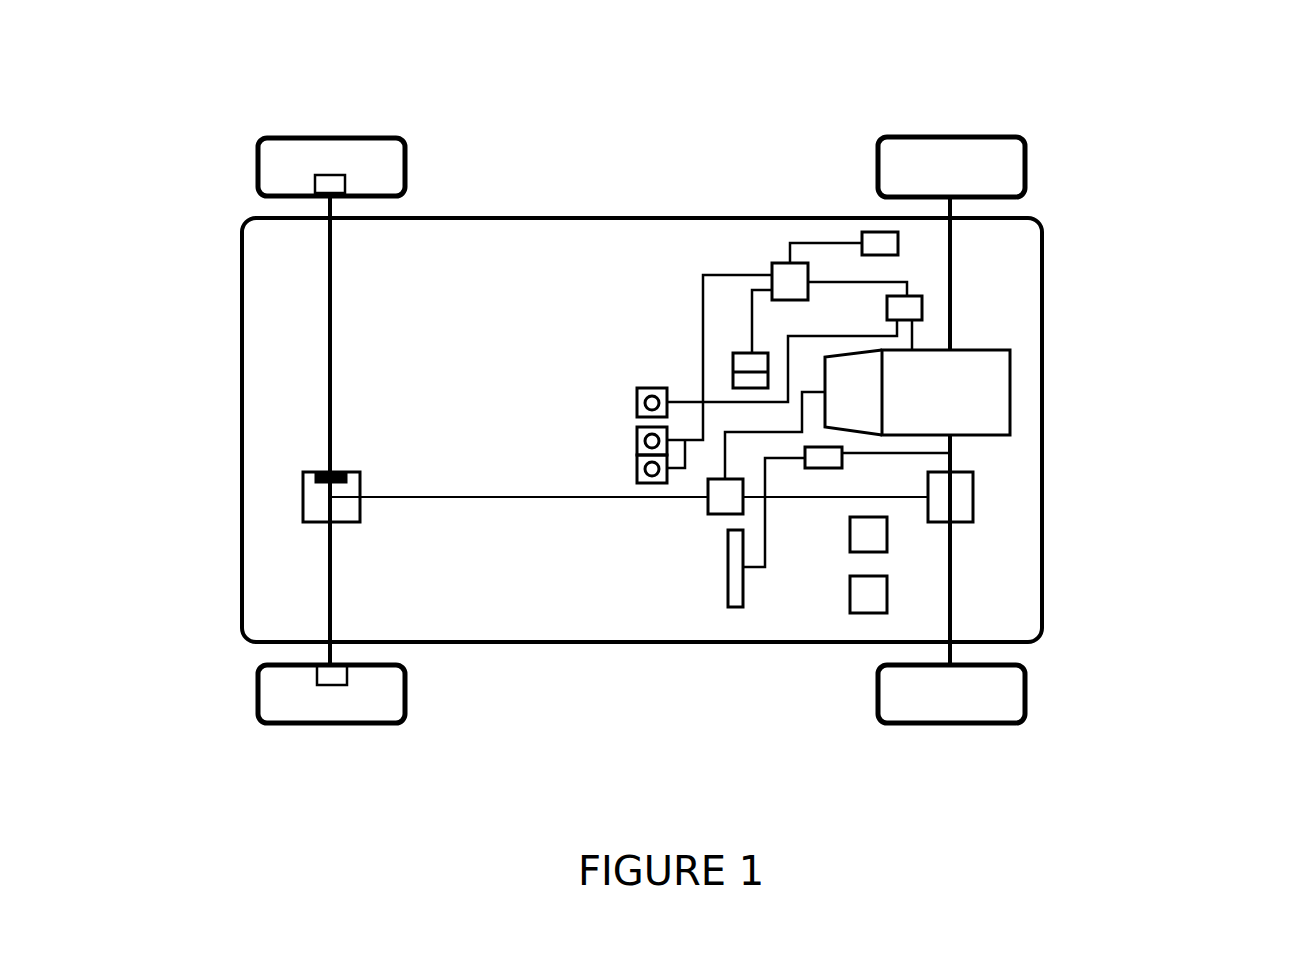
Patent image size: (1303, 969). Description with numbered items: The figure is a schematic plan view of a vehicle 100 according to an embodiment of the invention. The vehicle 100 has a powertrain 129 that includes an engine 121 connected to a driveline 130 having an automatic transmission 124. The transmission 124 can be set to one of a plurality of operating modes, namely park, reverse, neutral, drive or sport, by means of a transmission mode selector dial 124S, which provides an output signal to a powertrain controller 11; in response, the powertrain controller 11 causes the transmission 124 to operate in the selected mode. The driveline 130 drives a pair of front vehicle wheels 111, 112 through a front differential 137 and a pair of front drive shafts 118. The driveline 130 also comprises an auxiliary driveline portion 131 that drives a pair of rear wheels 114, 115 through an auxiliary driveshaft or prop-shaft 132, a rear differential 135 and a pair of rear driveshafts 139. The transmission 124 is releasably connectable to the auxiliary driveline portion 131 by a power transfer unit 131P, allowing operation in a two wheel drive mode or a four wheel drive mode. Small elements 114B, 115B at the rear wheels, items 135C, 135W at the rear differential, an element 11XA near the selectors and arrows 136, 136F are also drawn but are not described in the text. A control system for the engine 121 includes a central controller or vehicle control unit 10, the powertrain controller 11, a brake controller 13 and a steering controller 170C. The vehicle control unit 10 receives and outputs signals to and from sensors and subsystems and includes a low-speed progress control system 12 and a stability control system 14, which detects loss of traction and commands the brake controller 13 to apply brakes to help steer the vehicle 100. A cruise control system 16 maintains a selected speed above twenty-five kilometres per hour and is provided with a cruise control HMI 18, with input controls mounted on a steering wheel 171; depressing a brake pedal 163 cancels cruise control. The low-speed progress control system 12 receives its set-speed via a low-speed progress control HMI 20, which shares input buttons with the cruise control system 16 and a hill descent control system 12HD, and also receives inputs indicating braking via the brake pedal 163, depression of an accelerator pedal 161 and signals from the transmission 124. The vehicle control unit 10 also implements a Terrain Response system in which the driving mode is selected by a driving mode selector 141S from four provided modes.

The vehicle 100 is at (1192, 154).
The powertrain 129 is at (1187, 392).
The driveline 130 is at (1152, 621).
The front vehicle wheel 111 is at (1002, 160).
The front vehicle wheel 112 is at (1003, 710).
The rear wheel 114 is at (303, 160).
The rear wheel 115 is at (288, 698).
The brake 114B is at (315, 183).
The brake 115B is at (318, 672).
The front drive shafts 118 is at (950, 263).
The rear driveshafts 139 is at (330, 292).
The steering system 136 is at (307, 338).
The rear differential 135 is at (313, 522).
The clutch 135C is at (325, 476).
The worm gear 135W is at (330, 497).
The auxiliary driveshaft or prop-shaft 132 is at (492, 497).
The auxiliary driveline portion 131 is at (530, 693).
The power transfer unit 131P is at (718, 507).
The front differential 137 is at (967, 496).
The steering force 136F is at (967, 452).
The engine 121 is at (978, 378).
The automatic transmission 124 is at (852, 372).
The transmission mode selector dial 124S is at (637, 468).
The acceleration sensor 11XA is at (637, 440).
The driving mode selector 141S is at (637, 402).
The vehicle control unit 10 is at (761, 198).
The low-speed progress control system 12 is at (829, 298).
The stability control system 14 is at (829, 298).
The cruise control system 16 is at (829, 298).
The hill descent control system 12HD is at (782, 273).
The brake controller 13 is at (872, 243).
The powertrain controller 11 is at (913, 310).
The cruise control HMI 18 is at (698, 262).
The low-speed progress control HMI 20 is at (733, 355).
The steering controller 170C is at (823, 463).
The steering wheel 171 is at (735, 603).
The brake pedal 163 is at (863, 537).
The accelerator pedal 161 is at (867, 602).